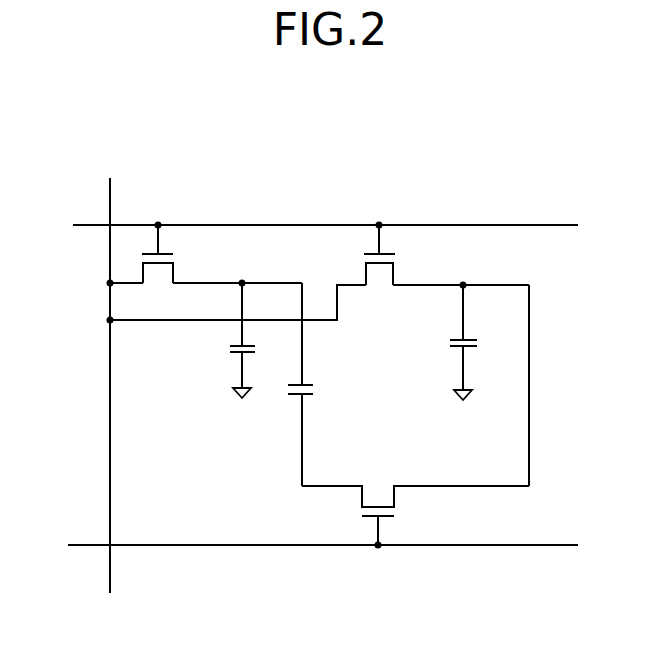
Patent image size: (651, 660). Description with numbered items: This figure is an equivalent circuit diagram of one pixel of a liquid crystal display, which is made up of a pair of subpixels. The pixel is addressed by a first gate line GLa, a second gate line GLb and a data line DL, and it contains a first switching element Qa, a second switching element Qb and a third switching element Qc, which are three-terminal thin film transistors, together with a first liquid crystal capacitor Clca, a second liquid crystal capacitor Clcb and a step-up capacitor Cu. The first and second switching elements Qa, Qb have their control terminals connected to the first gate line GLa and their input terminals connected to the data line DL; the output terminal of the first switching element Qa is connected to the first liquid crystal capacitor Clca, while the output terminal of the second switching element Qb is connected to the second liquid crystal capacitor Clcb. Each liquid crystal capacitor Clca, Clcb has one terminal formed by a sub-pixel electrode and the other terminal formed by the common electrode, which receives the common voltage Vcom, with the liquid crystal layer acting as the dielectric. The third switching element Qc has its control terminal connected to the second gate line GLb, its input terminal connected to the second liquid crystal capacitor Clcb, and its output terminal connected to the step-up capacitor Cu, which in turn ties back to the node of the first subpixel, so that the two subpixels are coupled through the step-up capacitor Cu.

The data line DL is at (109, 372).
The first gate line GLa is at (297, 224).
The second gate line GLb is at (296, 544).
The first switching element Qa is at (205, 265).
The second switching element Qb is at (318, 273).
The third switching element Qc is at (415, 417).
The first liquid crystal capacitor Clca is at (217, 335).
The second liquid crystal capacitor Clcb is at (437, 337).
The step-up capacitor Cu is at (319, 384).
The common voltage Vcom is at (352, 407).